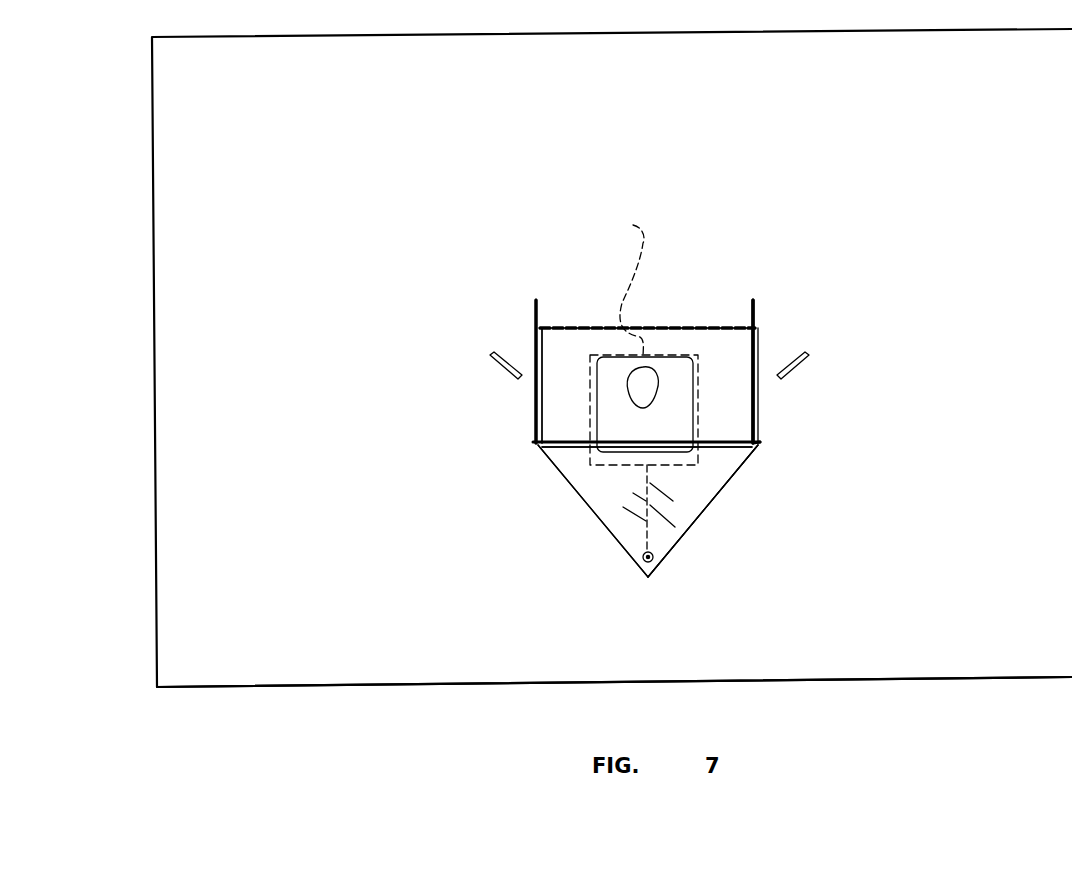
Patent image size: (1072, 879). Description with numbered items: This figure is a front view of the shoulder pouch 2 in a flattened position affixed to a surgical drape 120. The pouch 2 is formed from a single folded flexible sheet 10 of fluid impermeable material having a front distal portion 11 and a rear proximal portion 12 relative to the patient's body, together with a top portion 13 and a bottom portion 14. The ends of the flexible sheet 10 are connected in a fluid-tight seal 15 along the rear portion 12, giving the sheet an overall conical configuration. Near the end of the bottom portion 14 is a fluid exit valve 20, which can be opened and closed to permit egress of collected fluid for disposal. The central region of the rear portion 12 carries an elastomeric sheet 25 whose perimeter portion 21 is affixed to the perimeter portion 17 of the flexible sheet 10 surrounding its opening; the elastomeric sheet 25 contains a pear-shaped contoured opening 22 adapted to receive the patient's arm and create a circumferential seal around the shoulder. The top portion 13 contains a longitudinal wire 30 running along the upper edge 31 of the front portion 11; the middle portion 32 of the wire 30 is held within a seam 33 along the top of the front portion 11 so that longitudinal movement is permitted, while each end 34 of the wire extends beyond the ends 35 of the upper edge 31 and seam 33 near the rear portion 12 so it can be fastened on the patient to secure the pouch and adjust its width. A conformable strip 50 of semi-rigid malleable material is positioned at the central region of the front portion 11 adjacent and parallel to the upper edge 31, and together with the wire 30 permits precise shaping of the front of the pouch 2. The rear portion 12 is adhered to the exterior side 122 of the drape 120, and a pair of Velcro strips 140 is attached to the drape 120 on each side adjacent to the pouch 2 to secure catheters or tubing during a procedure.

The shoulder pouch 2 is at (682, 323).
The flexible sheet 10 is at (723, 325).
The front distal portion 11 is at (700, 500).
The rear proximal portion 12 is at (578, 343).
The top portion 13 is at (733, 455).
The bottom portion 14 is at (670, 553).
The fluid-tight seal 15 is at (626, 384).
The perimeter portion of the flexible sheet 17 is at (598, 399).
The fluid exit valve 20 is at (640, 558).
The perimeter portion of the elastomeric sheet 21 is at (693, 403).
The contoured opening 22 is at (638, 383).
The elastomeric sheet 25 is at (673, 387).
The longitudinal wire 30 is at (760, 393).
The upper edge 31 is at (760, 335).
The middle portion of the wire 32 is at (597, 440).
The seam 33 is at (535, 350).
The wire end 34 is at (535, 310).
The ends of the upper edge 35 is at (535, 326).
The conformable strip 50 is at (612, 465).
The surgical drape 120 is at (812, 667).
The exterior side of the drape 122 is at (955, 645).
The Velcro strips 140 is at (492, 360).